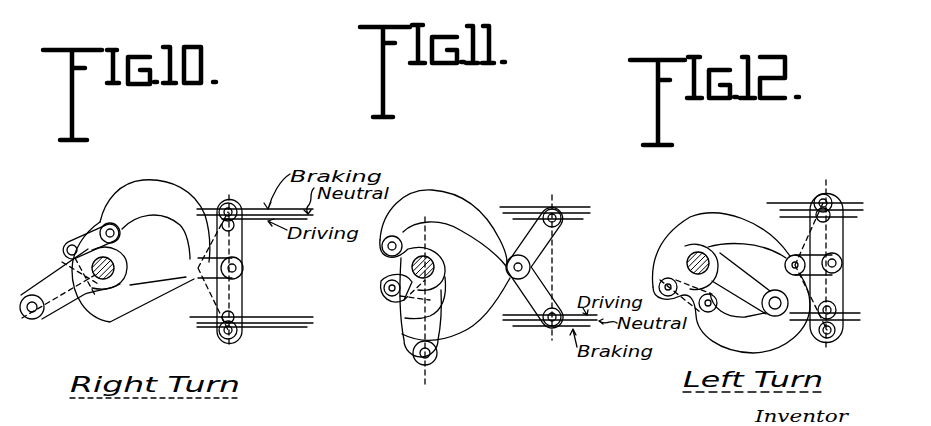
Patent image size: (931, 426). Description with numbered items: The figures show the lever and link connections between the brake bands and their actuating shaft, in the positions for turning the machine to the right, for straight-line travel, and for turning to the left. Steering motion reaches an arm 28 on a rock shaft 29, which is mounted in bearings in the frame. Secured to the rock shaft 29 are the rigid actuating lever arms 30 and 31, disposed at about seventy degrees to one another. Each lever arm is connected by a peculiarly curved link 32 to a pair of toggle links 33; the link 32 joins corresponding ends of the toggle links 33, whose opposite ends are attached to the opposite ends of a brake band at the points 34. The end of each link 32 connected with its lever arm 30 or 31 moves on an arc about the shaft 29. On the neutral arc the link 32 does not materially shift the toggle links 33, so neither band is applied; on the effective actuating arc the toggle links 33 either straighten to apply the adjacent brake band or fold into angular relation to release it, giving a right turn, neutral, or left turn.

In FIG. 10, the arm 28 is at (54, 302).
In FIG. 11, the arm 28 is at (415, 327).
In FIG. 12, the arm 28 is at (742, 278).
In FIG. 10, the rock shaft 29 is at (124, 262).
In FIG. 11, the rock shaft 29 is at (437, 265).
In FIG. 12, the rock shaft 29 is at (688, 257).
In FIG. 10, the actuating lever arm 30 is at (104, 228).
In FIG. 11, the actuating lever arm 30 is at (438, 228).
In FIG. 10, the actuating lever arm 31 is at (60, 252).
In FIG. 11, the actuating lever arm 31 is at (386, 279).
In FIG. 10, the link 32 is at (150, 183).
In FIG. 11, the link 32 is at (472, 215).
In FIG. 12, the link 32 is at (737, 227).
In FIG. 10, the toggle links 33 is at (246, 245).
In FIG. 11, the toggle links 33 is at (540, 297).
In FIG. 12, the toggle links 33 is at (805, 232).
In FIG. 10, the point of attachment of toggle links to brake band 34 is at (226, 203).
In FIG. 11, the point of attachment of toggle links to brake band 34 is at (563, 213).
In FIG. 12, the point of attachment of toggle links to brake band 34 is at (825, 256).